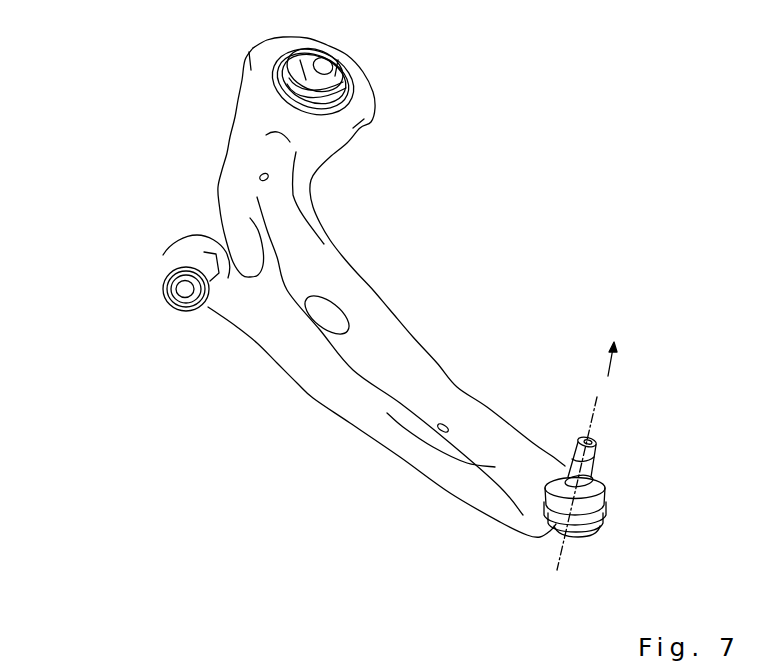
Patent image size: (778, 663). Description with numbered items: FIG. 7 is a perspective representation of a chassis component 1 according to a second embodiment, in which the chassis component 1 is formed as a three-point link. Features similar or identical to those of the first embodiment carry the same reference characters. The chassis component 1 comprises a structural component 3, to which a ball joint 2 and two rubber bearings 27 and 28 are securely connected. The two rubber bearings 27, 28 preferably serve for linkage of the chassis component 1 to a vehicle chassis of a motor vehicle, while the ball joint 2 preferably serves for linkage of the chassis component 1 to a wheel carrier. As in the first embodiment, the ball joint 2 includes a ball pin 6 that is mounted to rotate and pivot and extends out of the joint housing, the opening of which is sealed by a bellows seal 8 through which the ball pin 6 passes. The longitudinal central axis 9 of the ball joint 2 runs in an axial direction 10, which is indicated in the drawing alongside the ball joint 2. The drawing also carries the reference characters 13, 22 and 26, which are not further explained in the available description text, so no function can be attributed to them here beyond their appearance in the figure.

The chassis component 1 is at (100, 56).
The ball joint 2 is at (596, 472).
The structural component 3 is at (351, 280).
The ball pin 6 is at (594, 443).
The bellows seal 8 is at (600, 497).
The longitudinal central axis 9 is at (560, 553).
The axial direction 10 is at (612, 363).
The ball joint axis 13 is at (597, 406).
The component 22 is at (247, 658).
The component 26 is at (163, 655).
The rubber bearing 27 is at (342, 70).
The rubber bearing 28 is at (183, 257).